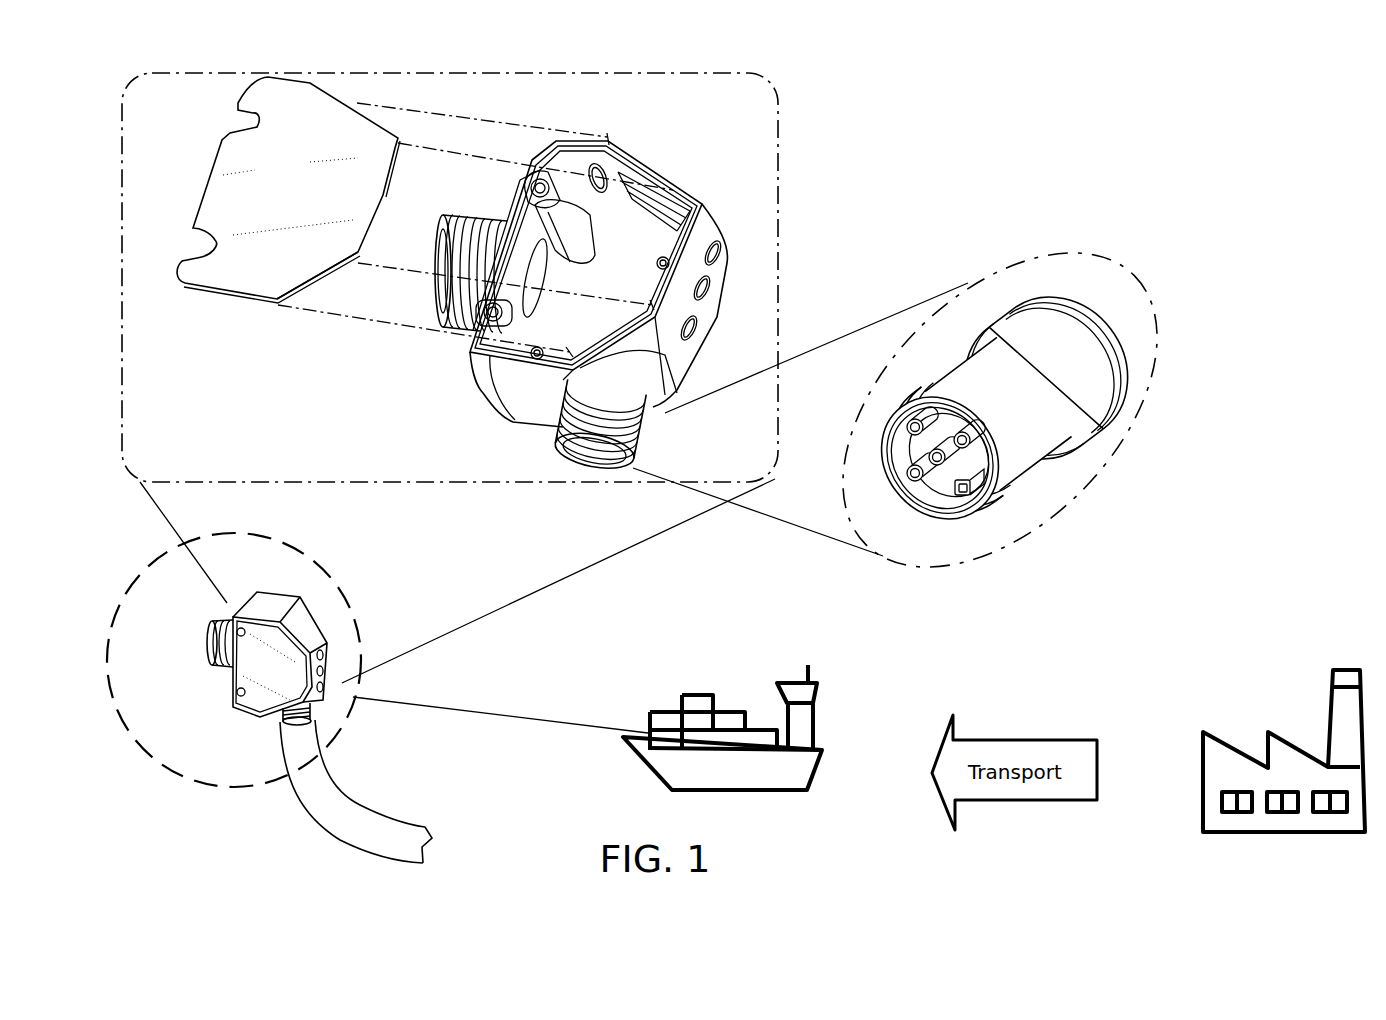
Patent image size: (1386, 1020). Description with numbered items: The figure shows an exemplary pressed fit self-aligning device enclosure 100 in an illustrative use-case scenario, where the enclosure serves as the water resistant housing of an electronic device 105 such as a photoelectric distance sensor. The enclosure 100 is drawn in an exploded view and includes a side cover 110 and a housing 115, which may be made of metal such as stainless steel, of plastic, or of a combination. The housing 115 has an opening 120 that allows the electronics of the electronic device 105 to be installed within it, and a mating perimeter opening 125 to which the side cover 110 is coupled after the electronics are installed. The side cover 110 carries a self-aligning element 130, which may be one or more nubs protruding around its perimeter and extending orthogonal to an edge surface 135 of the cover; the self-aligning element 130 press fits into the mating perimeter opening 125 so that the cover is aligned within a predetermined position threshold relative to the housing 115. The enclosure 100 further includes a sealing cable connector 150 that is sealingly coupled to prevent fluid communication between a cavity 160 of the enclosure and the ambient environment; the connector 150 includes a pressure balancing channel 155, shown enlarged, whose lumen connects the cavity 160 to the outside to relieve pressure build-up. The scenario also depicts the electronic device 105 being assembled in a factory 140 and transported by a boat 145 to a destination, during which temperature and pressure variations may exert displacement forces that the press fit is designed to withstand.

The pressed fit self-aligning device enclosure 100 is at (212, 101).
The electronic device 105 is at (318, 700).
The side cover 110 is at (400, 113).
The housing 115 is at (487, 383).
The opening 120 is at (638, 174).
The mating perimeter opening 125 is at (533, 172).
The self-aligning element 130 is at (384, 196).
The edge surface 135 is at (320, 277).
The factory 140 is at (1203, 747).
The boat 145 is at (827, 748).
The sealing cable connector 150 is at (563, 463).
The pressure balancing channel 155 is at (973, 488).
The cavity 160 is at (596, 282).